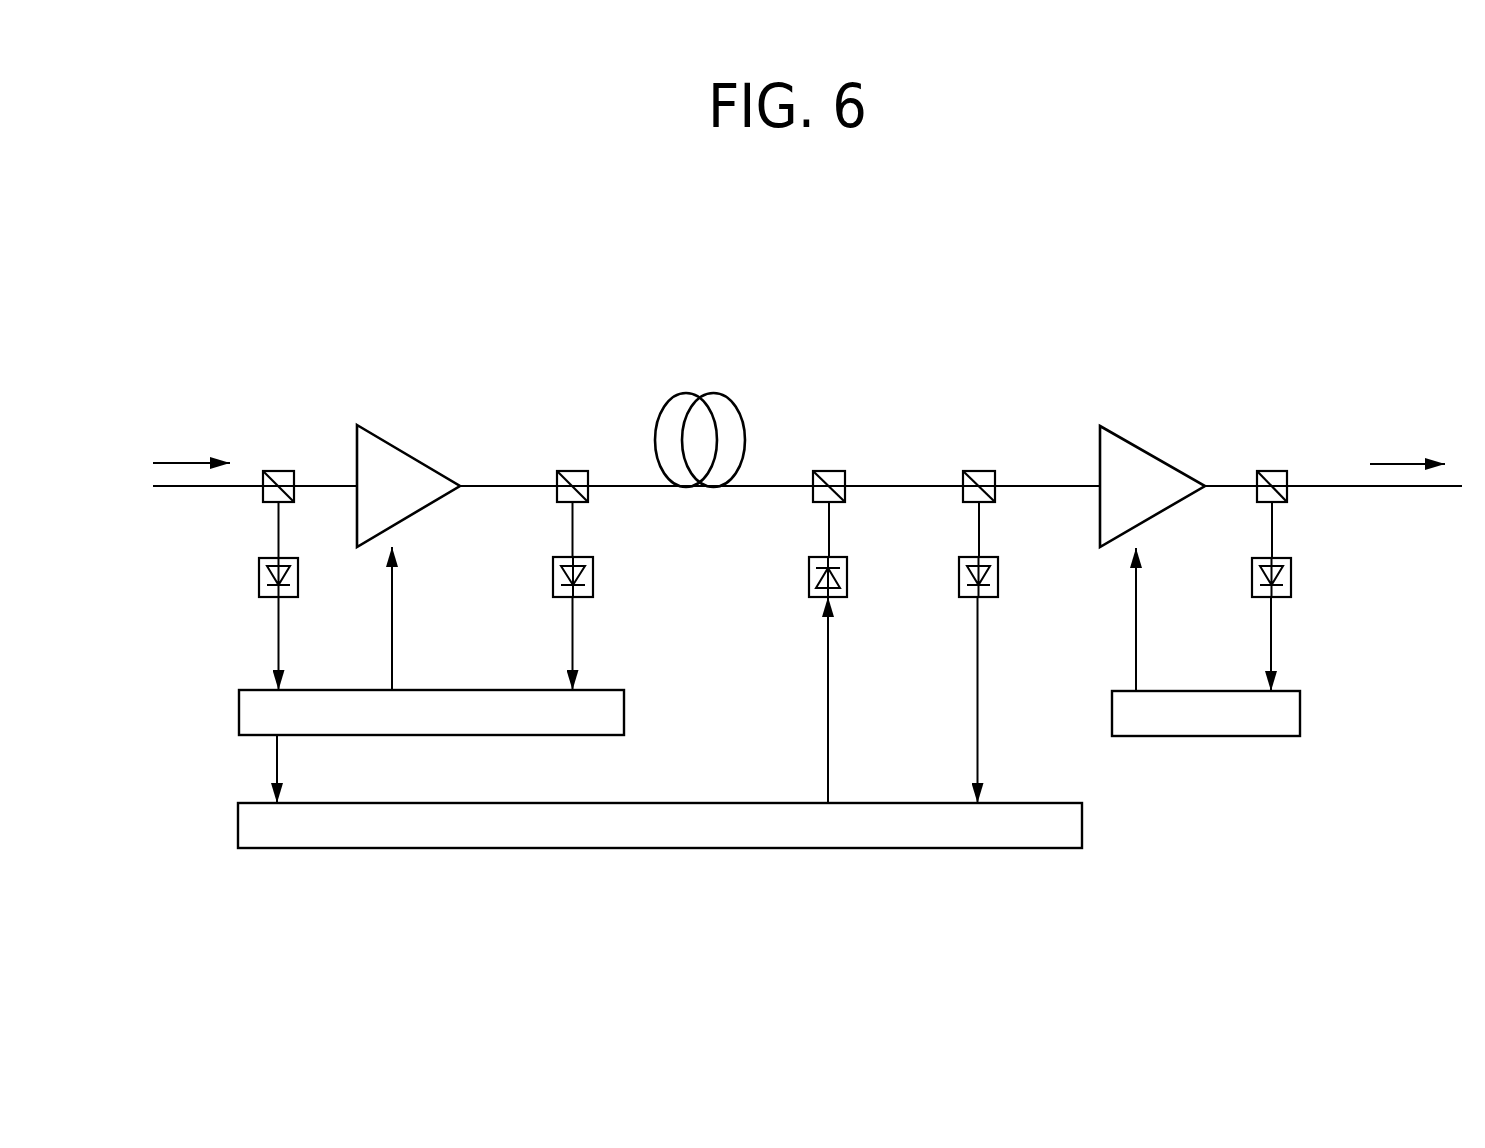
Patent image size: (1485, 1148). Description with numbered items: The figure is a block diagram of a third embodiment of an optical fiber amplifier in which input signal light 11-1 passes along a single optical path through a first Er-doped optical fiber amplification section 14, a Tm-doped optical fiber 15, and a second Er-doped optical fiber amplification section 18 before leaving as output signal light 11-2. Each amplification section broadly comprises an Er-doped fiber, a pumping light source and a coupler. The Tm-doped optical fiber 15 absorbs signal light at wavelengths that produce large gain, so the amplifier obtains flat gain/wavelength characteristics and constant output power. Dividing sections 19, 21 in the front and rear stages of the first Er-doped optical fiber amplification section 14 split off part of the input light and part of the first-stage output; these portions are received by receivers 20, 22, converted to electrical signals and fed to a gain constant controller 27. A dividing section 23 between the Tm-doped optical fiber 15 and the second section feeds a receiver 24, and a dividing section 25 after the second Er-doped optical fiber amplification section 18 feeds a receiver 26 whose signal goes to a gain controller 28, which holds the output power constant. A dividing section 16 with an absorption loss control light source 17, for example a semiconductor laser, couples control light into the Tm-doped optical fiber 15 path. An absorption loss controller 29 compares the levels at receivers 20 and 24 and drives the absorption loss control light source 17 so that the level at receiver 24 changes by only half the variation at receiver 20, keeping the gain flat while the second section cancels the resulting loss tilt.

The input signal light 11-1 is at (192, 438).
The output signal light 11-2 is at (1411, 439).
The first Er-doped optical fiber amplification section 14 is at (395, 458).
The Tm-doped optical fiber 15 is at (714, 395).
The optical coupler 16 is at (831, 469).
The absorption loss control light source 17 is at (808, 577).
The second Er-doped optical fiber amplification section 18 is at (1128, 463).
The dividing section 19 is at (283, 469).
The receiver 20 is at (258, 577).
The dividing section 21 is at (575, 469).
The receiver 22 is at (552, 577).
The dividing section 23 is at (981, 469).
The receiver 24 is at (958, 577).
The dividing section 25 is at (1274, 470).
The receiver 26 is at (1293, 578).
The gain constant controller 27 is at (463, 720).
The gain controller 28 is at (1210, 722).
The absorption loss controller 29 is at (710, 838).